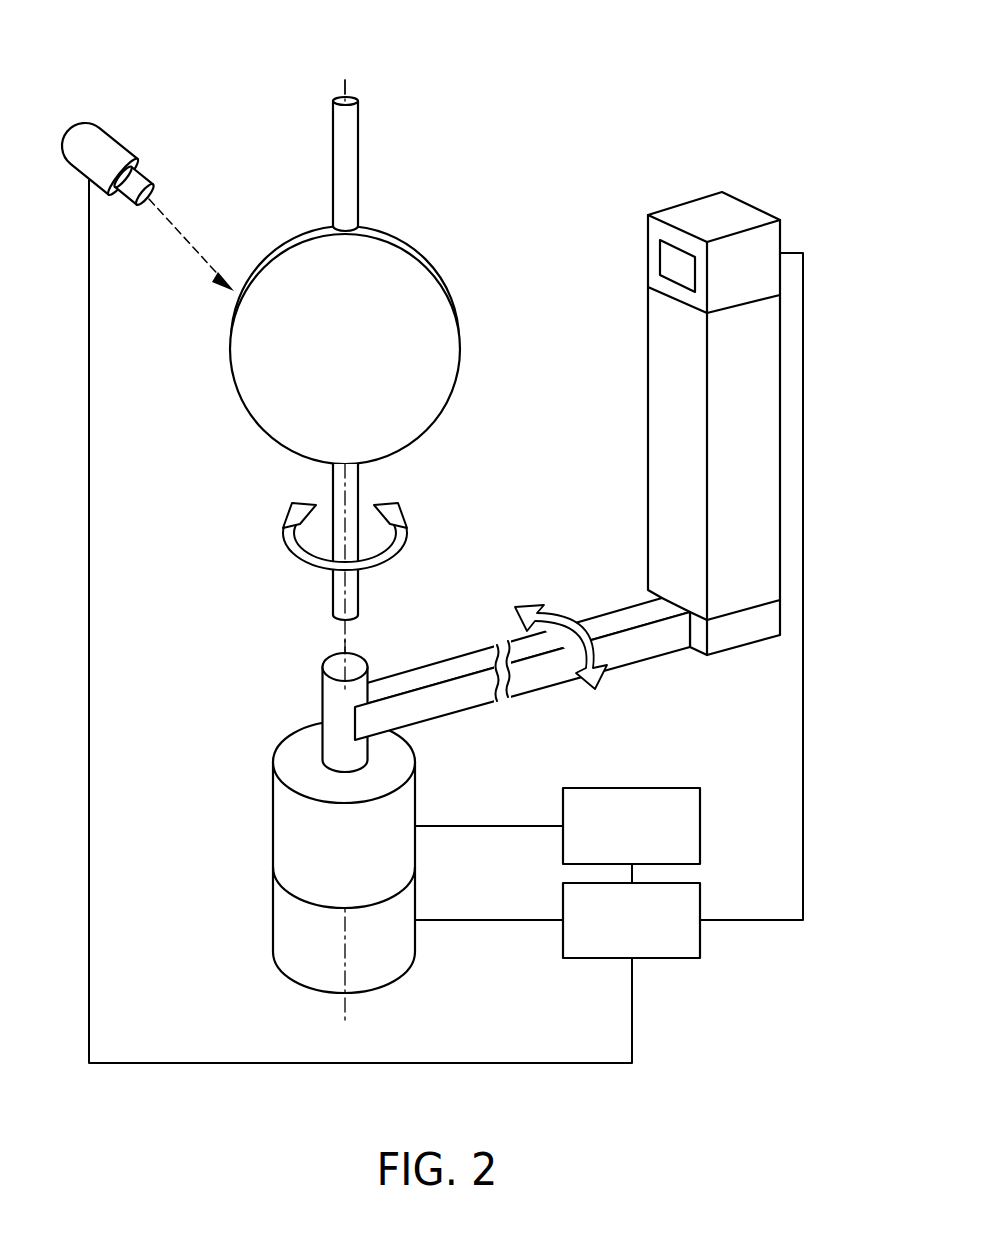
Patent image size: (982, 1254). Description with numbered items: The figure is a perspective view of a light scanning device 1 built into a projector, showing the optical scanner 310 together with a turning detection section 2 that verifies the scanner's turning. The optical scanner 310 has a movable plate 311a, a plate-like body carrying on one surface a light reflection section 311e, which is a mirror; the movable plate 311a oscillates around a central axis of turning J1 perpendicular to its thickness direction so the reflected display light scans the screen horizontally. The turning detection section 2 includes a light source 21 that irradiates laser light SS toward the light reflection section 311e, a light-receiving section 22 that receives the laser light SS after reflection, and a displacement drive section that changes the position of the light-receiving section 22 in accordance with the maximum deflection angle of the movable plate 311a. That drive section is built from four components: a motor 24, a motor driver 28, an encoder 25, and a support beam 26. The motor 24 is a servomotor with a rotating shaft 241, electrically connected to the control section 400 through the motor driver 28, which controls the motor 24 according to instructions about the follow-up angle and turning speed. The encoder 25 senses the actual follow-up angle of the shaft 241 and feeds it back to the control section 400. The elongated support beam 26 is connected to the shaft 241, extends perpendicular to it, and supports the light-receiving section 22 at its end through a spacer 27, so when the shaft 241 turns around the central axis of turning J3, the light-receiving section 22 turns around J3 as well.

The light scanning device 1 is at (628, 74).
The turning detection section 2 is at (583, 146).
The light source 21 is at (126, 141).
The laser light SS is at (190, 237).
The optical scanner 310 is at (451, 182).
The movable plate 311a is at (427, 245).
The light reflection section 311e is at (407, 330).
The light-receiving section 22 is at (694, 196).
The spacer 27 is at (667, 395).
The central axis of turning J1 is at (352, 587).
The central axis of turning J3 is at (350, 665).
The rotating shaft 241 is at (330, 698).
The motor 24 is at (420, 793).
The encoder 25 is at (420, 893).
The support beam 26 is at (557, 689).
The motor driver 28 is at (658, 788).
The control section 400 is at (667, 959).